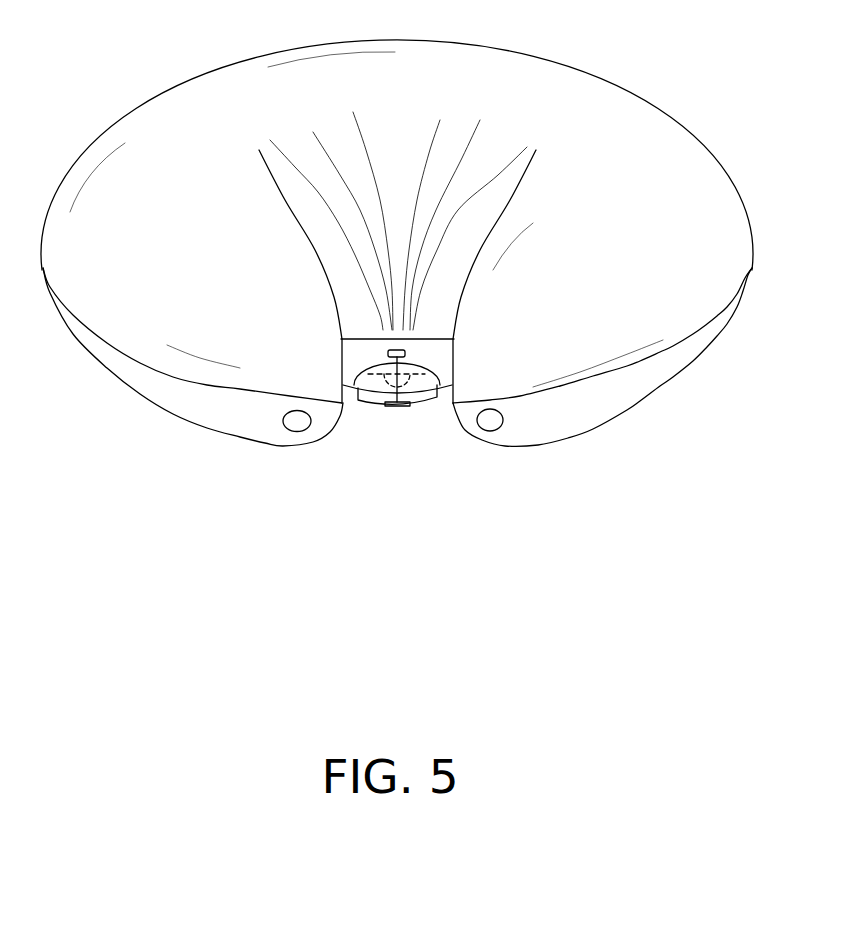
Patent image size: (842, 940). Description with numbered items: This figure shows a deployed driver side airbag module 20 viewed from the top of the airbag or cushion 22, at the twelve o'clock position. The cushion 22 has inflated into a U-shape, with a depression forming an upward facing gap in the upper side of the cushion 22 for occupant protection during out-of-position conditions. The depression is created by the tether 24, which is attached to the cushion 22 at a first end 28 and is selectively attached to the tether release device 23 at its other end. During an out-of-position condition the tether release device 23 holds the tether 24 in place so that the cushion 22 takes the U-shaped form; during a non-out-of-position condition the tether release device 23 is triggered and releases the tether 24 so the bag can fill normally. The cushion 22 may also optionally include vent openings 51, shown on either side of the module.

The cushion 22 is at (165, 106).
The vent openings 51 is at (280, 417).
The driver side airbag module 20 is at (375, 412).
The tether 24 is at (355, 370).
The first end 28 is at (443, 397).
The tether release device 23 is at (408, 406).